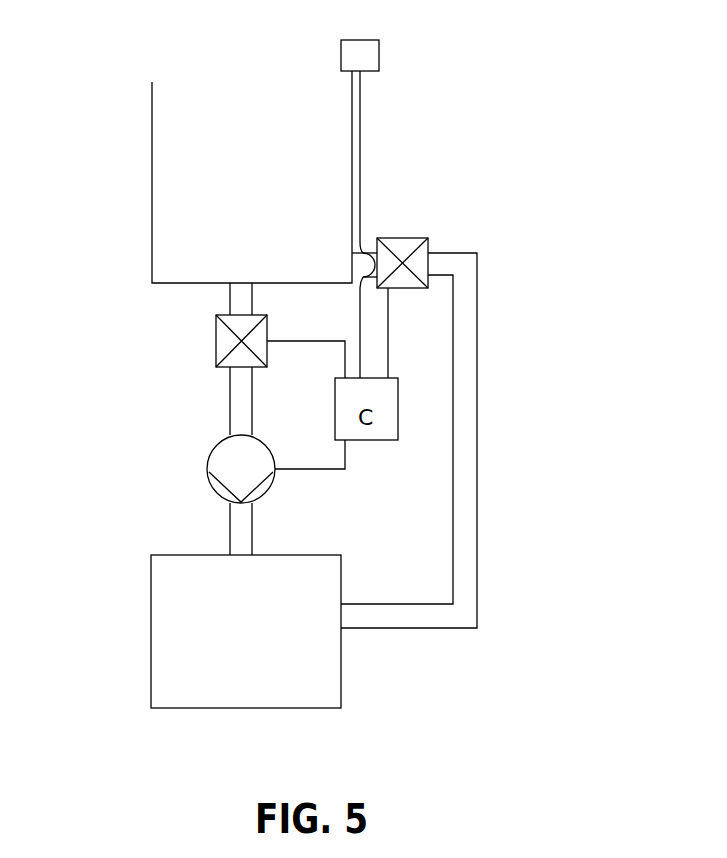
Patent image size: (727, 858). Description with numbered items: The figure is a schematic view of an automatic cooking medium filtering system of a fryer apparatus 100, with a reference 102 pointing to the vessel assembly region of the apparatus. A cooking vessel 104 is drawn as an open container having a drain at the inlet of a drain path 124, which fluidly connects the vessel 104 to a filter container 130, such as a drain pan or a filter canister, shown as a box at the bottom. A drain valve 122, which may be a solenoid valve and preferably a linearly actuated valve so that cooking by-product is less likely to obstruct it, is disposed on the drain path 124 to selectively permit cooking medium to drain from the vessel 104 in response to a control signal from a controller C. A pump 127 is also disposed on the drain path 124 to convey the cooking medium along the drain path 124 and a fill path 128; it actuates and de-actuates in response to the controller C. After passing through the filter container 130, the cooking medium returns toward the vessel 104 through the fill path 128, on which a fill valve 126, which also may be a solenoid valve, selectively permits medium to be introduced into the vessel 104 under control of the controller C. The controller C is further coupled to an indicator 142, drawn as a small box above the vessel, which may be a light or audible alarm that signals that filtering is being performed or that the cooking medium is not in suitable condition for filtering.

The fryer apparatus 100 is at (497, 100).
The reservoir assembly 102 is at (175, 80).
The cooking vessel 104 is at (181, 192).
The drain valve 122 is at (216, 341).
The drain path 124 is at (230, 394).
The fill valve 126 is at (402, 238).
The pump 127 is at (211, 452).
The fill path 128 is at (468, 422).
The filter container 130 is at (165, 639).
The indicator 142 is at (378, 40).